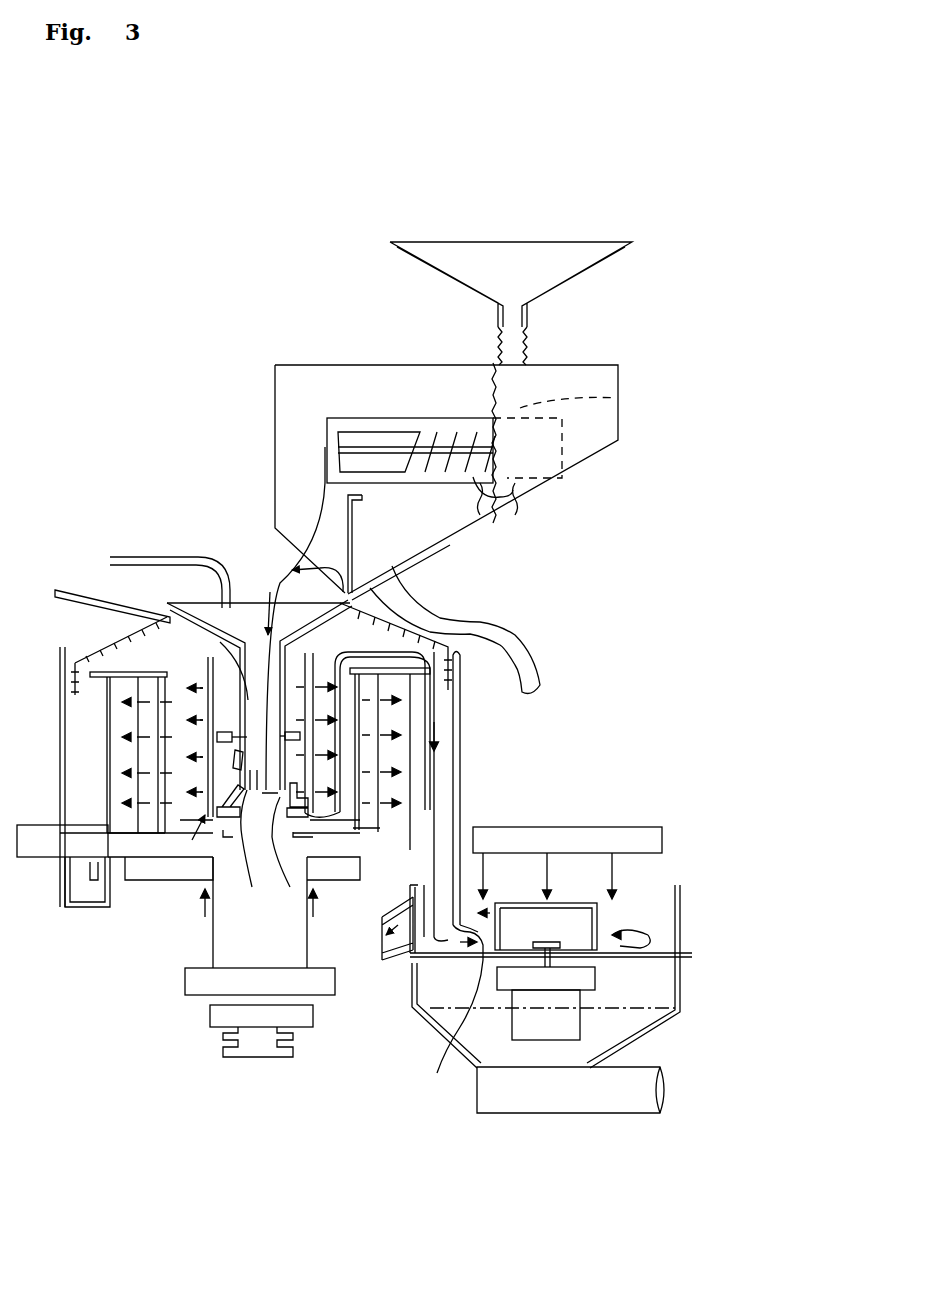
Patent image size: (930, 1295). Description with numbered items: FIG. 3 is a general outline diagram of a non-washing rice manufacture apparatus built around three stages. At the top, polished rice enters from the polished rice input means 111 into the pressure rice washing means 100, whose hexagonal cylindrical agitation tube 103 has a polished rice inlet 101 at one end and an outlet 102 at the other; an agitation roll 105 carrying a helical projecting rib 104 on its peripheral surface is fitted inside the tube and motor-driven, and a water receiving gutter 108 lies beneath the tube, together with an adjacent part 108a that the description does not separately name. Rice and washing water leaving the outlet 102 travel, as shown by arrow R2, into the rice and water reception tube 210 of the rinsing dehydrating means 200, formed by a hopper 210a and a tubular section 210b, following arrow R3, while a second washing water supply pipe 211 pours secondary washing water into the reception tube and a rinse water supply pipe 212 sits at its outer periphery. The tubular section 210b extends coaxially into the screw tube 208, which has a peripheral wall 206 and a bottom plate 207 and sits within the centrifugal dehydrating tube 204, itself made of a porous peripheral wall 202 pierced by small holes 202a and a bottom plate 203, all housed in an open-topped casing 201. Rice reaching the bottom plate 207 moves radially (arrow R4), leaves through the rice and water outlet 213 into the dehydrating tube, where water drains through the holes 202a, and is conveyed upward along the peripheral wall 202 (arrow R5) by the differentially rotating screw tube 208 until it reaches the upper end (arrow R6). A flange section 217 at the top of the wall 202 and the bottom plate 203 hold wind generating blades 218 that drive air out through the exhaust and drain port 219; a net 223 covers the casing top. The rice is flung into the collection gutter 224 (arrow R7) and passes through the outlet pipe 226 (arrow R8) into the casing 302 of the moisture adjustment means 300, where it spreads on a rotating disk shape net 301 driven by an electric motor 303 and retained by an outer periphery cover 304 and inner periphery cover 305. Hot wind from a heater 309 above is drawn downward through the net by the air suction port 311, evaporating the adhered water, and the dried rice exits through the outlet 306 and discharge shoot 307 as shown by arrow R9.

The pressure rice washing means 100 is at (262, 346).
The polished rice inlet 101 is at (623, 407).
The outlet 102 is at (326, 446).
The agitation tube 103 is at (524, 488).
The helical projecting rib 104 is at (393, 432).
The agitation roll 105 is at (500, 463).
The water receiving gutter 108 is at (408, 575).
The supply pipe branch 108a is at (538, 672).
The polished rice input means 111 is at (512, 238).
The rinsing dehydrating means 200 is at (56, 727).
The casing 201 is at (380, 770).
The peripheral wall 202 is at (460, 820).
The holes 202a is at (360, 700).
The bottom plate 203 is at (150, 832).
The centrifugal dehydrating tube 204 is at (372, 880).
The peripheral wall 206 is at (405, 668).
The bottom plate 207 is at (283, 835).
The screw tube 208 is at (195, 838).
The rice and water reception tube 210 is at (243, 602).
The hopper 210a is at (193, 615).
The tubular section 210b is at (274, 868).
The second washing water supply pipe 211 is at (137, 557).
The rinse water supply pipe 212 is at (82, 590).
The rice and water outlet 213 is at (290, 870).
The flange section 217 is at (462, 645).
The wind generating blades 218 is at (143, 747).
The exhaust and drain port 219 is at (37, 848).
The net 223 is at (125, 670).
The collection gutter 224 is at (78, 908).
The outlet pipe 226 is at (452, 1007).
The moisture adjustment means 300 is at (614, 826).
The disk shape net 301 is at (615, 957).
The casing 302 is at (682, 940).
The electric motor 303 is at (585, 1030).
The outer periphery cover 304 is at (680, 885).
The inner periphery cover 305 is at (598, 905).
The outlet 306 is at (420, 1020).
The discharge shoot 307 is at (388, 930).
The heater 309 is at (628, 827).
The air suction port 311 is at (590, 1095).
The arrow R2 is at (317, 565).
The arrow R3 is at (286, 613).
The arrow R4 is at (276, 907).
The arrow R5 is at (380, 738).
The arrow R6 is at (425, 628).
The arrow R7 is at (400, 790).
The arrow R8 is at (453, 1003).
The arrow R9 is at (409, 961).